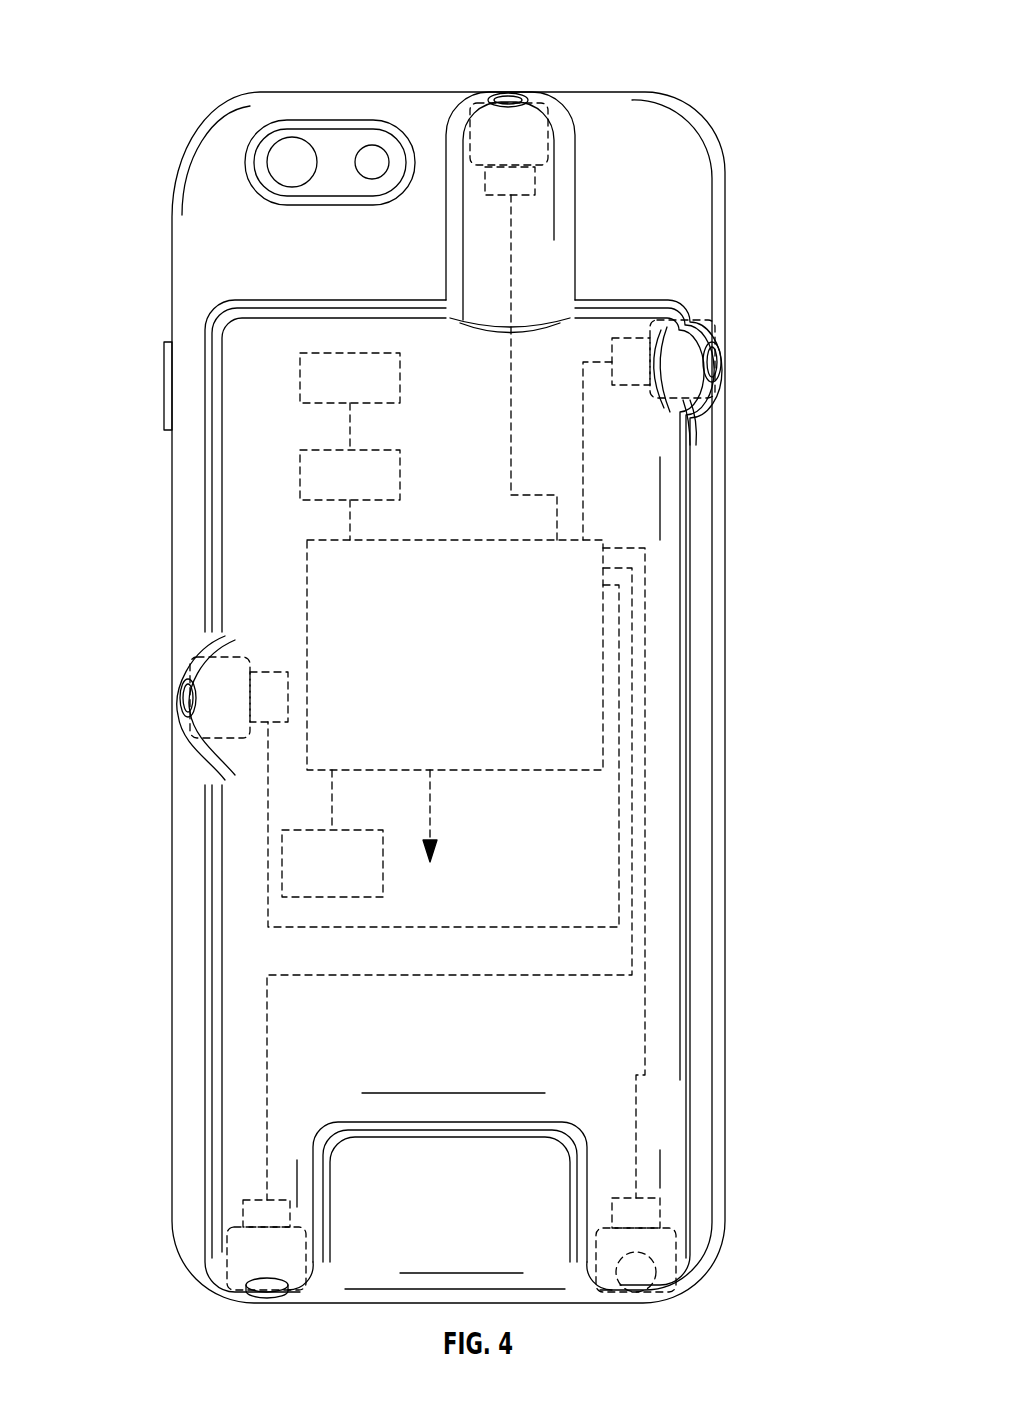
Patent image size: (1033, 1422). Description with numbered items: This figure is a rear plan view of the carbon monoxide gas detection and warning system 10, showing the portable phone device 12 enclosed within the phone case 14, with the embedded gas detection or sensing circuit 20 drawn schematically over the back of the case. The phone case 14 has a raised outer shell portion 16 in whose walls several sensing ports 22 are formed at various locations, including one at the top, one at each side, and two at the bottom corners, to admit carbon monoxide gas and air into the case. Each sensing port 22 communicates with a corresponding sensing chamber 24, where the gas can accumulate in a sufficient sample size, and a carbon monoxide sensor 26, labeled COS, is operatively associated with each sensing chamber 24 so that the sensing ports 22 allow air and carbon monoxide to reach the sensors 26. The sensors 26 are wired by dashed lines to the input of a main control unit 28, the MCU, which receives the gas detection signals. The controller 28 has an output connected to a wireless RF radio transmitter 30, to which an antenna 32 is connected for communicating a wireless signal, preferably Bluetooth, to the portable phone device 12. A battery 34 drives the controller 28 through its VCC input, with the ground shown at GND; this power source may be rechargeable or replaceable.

The carbon monoxide gas detection and warning system 10 is at (112, 127).
The portable phone device 12 is at (338, 150).
The phone case 14 is at (647, 92).
The raised outer shell portion 16 is at (228, 318).
The gas detection or sensing circuit 20 is at (602, 528).
The sensing port 22 is at (516, 97).
The sensing chamber 24 is at (465, 122).
The carbon monoxide sensor 26 is at (537, 182).
The main control unit 28 is at (563, 648).
The wireless RF radio transmitter 30 is at (300, 477).
The antenna 32 is at (300, 378).
The battery 34 is at (300, 895).